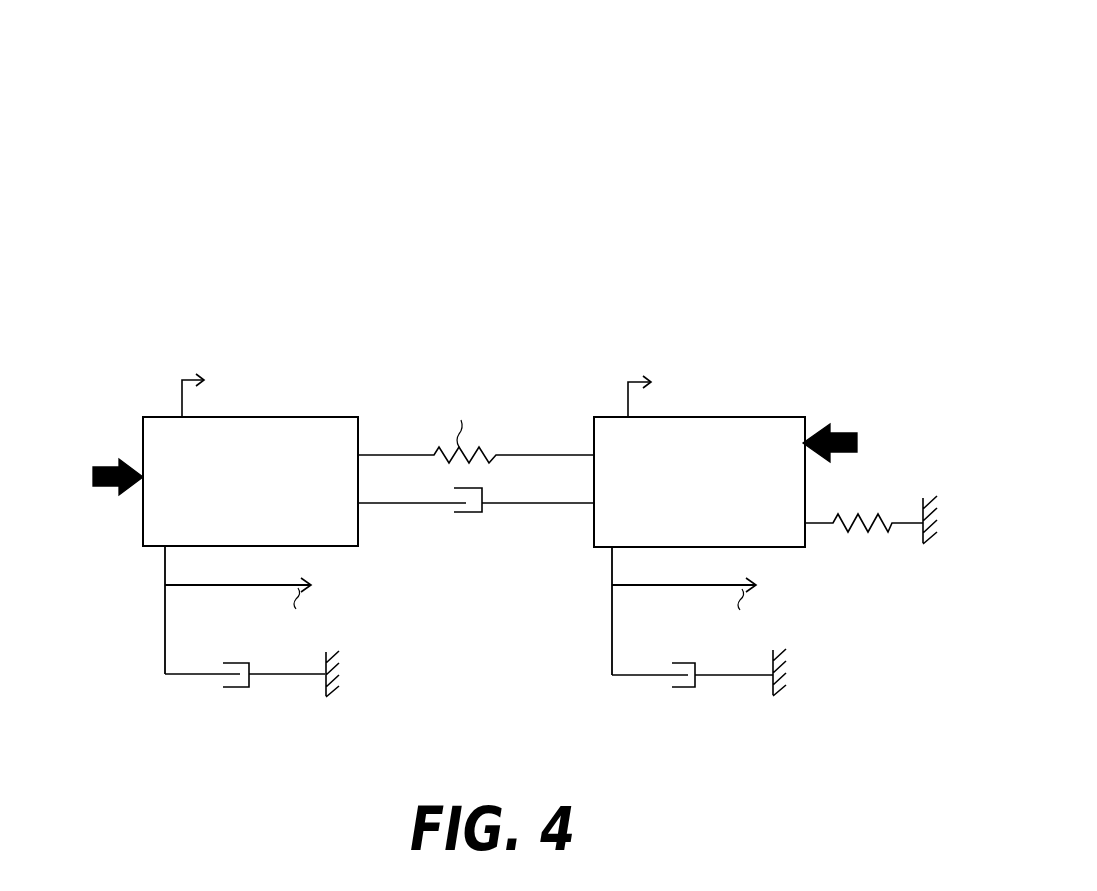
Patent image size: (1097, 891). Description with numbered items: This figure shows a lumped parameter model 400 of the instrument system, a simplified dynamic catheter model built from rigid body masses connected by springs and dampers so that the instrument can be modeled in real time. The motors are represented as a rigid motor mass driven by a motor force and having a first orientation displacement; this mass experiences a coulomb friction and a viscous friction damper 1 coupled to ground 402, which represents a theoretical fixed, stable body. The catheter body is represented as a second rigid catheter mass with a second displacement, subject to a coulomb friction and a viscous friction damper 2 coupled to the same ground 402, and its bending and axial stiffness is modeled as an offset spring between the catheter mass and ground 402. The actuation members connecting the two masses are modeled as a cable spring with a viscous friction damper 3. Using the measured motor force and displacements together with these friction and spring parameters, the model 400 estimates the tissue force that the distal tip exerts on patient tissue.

The lumped parameter model 400 is at (255, 157).
The ground 402 is at (328, 698).
The motor damper d1 1 is at (237, 690).
The catheter damper d2 2 is at (682, 692).
The cable damper d3 3 is at (469, 514).